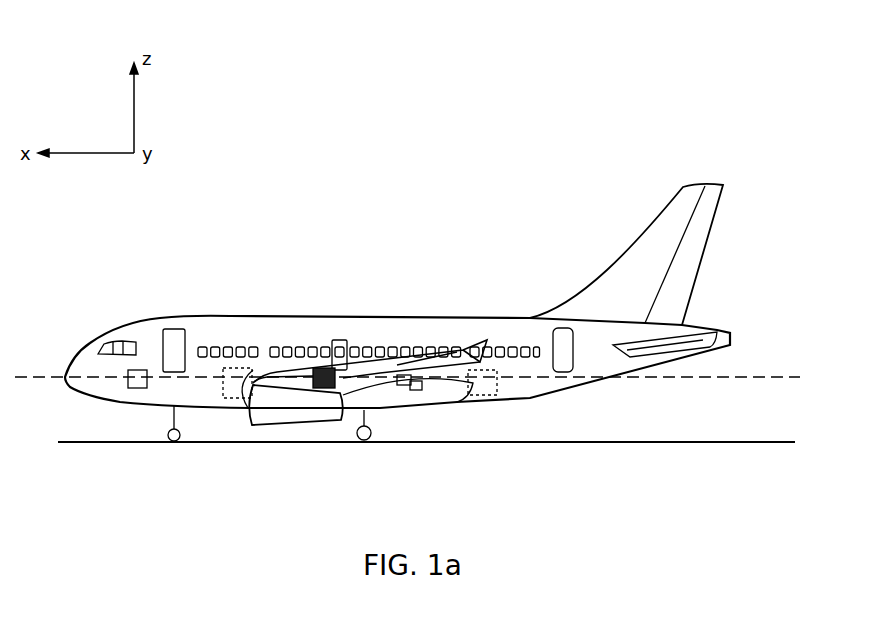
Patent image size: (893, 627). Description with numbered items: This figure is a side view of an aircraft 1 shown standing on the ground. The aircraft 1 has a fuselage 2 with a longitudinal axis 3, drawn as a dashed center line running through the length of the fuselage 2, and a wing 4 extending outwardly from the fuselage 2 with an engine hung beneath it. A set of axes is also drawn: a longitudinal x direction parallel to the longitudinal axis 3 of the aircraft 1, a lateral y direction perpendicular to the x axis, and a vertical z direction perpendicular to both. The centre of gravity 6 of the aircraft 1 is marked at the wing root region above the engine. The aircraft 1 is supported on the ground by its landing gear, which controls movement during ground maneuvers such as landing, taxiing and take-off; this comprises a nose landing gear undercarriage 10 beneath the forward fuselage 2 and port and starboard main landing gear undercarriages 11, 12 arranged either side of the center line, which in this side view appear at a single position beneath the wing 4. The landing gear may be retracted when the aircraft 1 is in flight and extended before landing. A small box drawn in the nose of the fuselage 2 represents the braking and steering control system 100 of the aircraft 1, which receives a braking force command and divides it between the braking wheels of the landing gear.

The aircraft 1 is at (108, 308).
The fuselage 2 is at (458, 330).
The longitudinal axis 3 is at (747, 377).
The wing 4 is at (383, 345).
The centre of gravity 6 is at (318, 372).
The nose landing gear undercarriage 10 is at (170, 418).
The port main landing gear undercarriage 11 is at (368, 418).
The starboard main landing gear undercarriage 12 is at (364, 425).
The braking and steering control system 100 is at (132, 389).